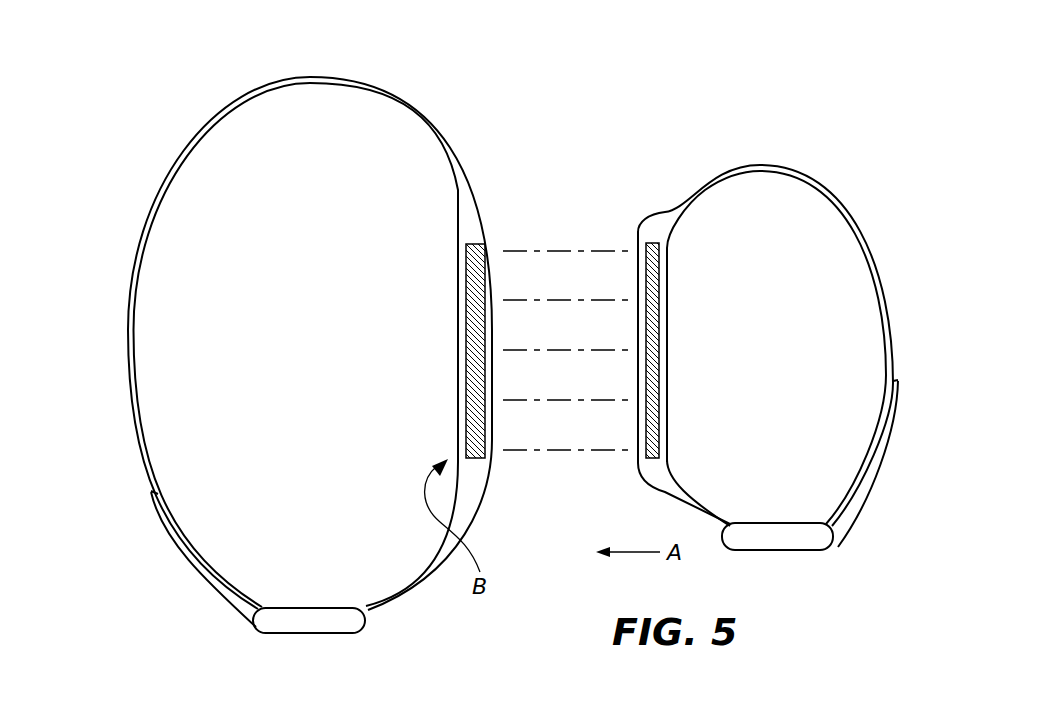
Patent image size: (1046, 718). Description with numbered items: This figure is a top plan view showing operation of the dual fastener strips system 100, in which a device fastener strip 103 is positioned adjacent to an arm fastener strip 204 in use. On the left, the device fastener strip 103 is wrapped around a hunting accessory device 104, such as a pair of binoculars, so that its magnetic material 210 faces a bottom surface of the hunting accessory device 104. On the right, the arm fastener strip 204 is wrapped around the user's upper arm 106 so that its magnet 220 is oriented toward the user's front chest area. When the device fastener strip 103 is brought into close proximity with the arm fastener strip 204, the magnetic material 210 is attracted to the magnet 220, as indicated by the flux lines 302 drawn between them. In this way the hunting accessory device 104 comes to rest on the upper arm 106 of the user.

The dual fastener strips system 100 is at (828, 86).
The device fastener strip 103 is at (392, 100).
The hunting accessory device 104 is at (222, 330).
The upper arm 106 is at (832, 256).
The arm fastener strip 204 is at (866, 209).
The magnetic material 210 is at (477, 457).
The magnet 220 is at (652, 240).
The flux lines 302 is at (571, 246).